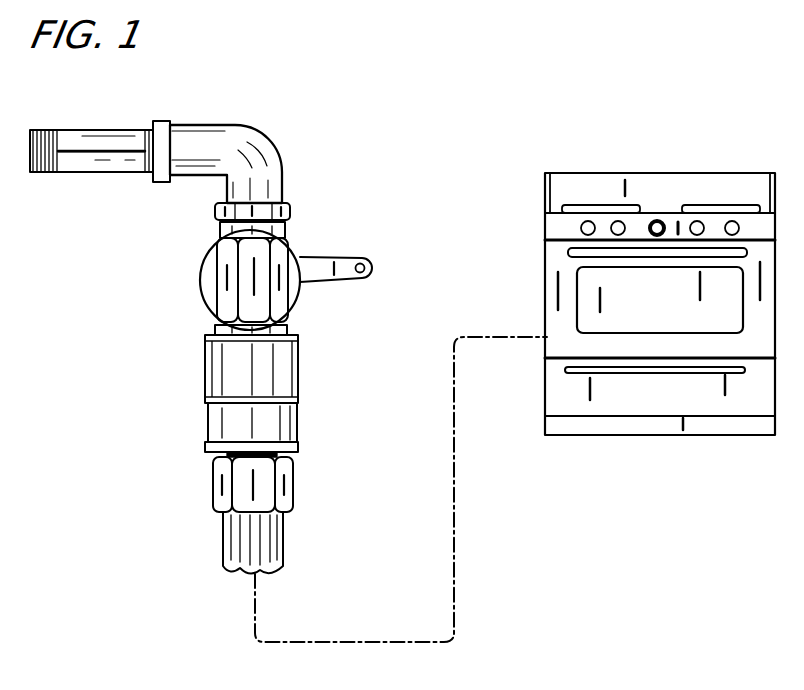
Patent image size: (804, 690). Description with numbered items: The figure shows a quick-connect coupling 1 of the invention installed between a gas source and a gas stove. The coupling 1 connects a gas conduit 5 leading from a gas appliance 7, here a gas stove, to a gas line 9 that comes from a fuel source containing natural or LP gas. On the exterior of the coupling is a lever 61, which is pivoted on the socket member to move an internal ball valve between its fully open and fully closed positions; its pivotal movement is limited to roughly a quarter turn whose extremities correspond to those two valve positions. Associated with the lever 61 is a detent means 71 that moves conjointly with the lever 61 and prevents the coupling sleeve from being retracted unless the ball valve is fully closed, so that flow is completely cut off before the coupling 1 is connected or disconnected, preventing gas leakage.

The quick-connect coupling 1 is at (377, 203).
The gas conduit 5 is at (223, 542).
The gas appliance 7 is at (547, 403).
The gas line 9 is at (92, 172).
The lever 61 is at (362, 284).
The detent means 71 is at (207, 288).